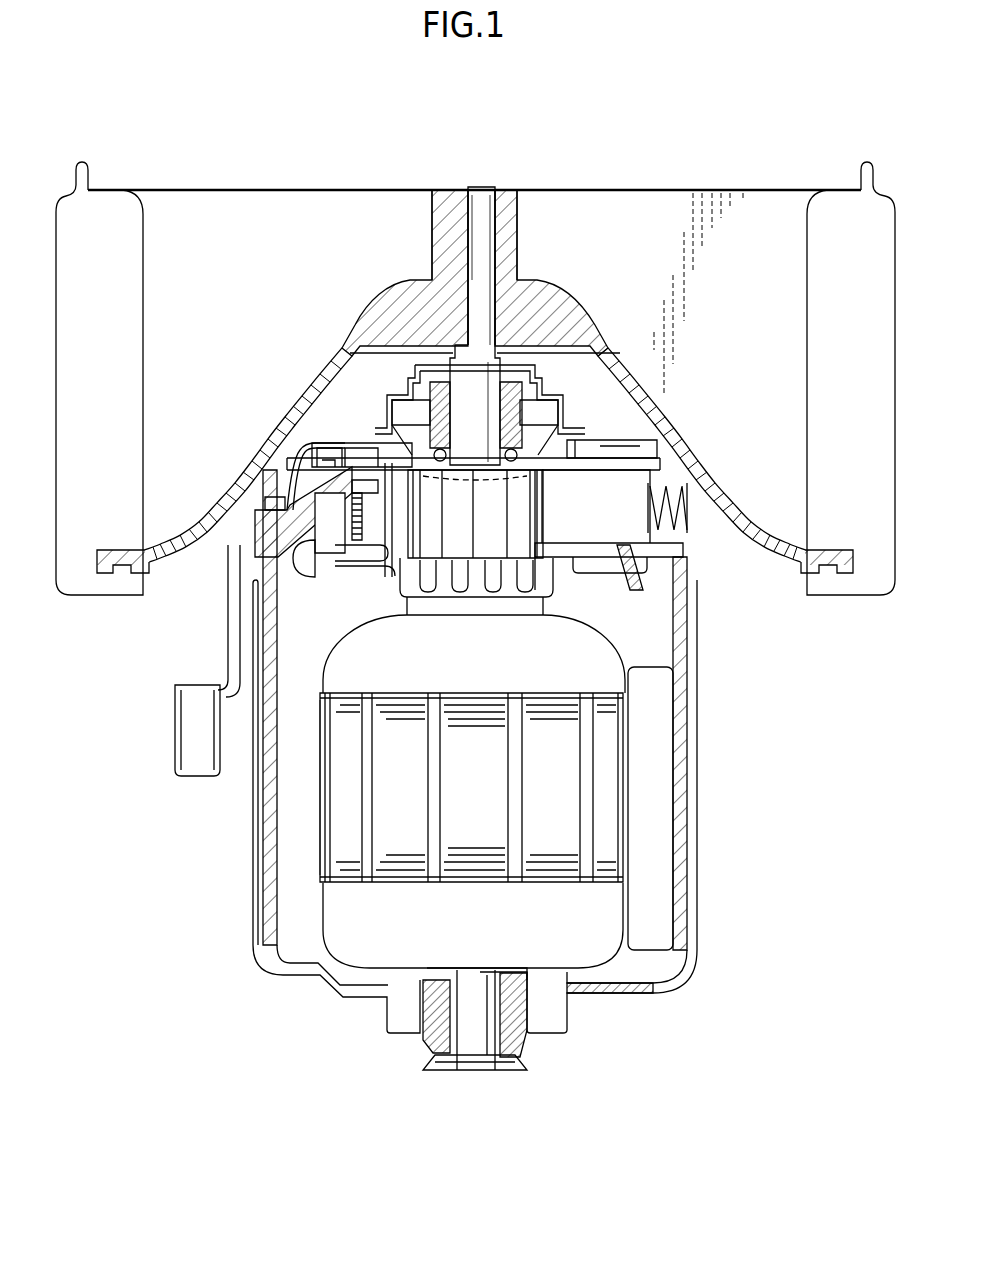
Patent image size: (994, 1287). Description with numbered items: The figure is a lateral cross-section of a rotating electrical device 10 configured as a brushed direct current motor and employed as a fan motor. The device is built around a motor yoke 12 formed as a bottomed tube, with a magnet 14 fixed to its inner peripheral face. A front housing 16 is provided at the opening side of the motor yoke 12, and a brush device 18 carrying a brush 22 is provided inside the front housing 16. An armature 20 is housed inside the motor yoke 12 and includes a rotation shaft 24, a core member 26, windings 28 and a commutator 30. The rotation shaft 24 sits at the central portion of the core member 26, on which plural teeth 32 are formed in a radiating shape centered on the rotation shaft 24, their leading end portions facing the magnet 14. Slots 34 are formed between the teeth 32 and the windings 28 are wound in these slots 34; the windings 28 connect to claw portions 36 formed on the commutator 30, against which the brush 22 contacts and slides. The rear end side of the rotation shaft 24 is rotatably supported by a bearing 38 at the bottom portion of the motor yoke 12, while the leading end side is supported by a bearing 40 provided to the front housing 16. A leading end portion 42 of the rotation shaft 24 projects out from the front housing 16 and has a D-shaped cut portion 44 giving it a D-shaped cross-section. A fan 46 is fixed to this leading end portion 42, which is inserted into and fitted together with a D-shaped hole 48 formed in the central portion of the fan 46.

The rotating electrical device 10 is at (544, 126).
The motor yoke 12 is at (687, 765).
The magnet 14 is at (651, 836).
The front housing 16 is at (318, 438).
The brush device 18 is at (607, 440).
The armature 20 is at (316, 837).
The brush 22 is at (620, 527).
The rotation shaft 24 is at (460, 1032).
The core member 26 is at (320, 800).
The windings 28 is at (347, 933).
The commutator 30 is at (580, 567).
The teeth 32 is at (360, 882).
The slots 34 is at (353, 930).
The claw portions 36 is at (407, 592).
The bearing 38 is at (527, 1047).
The bearing 40 is at (533, 365).
The leading end portion 42 is at (480, 187).
The D-shaped cut portion 44 is at (446, 205).
The fan 46 is at (200, 184).
The hole 48 is at (472, 264).